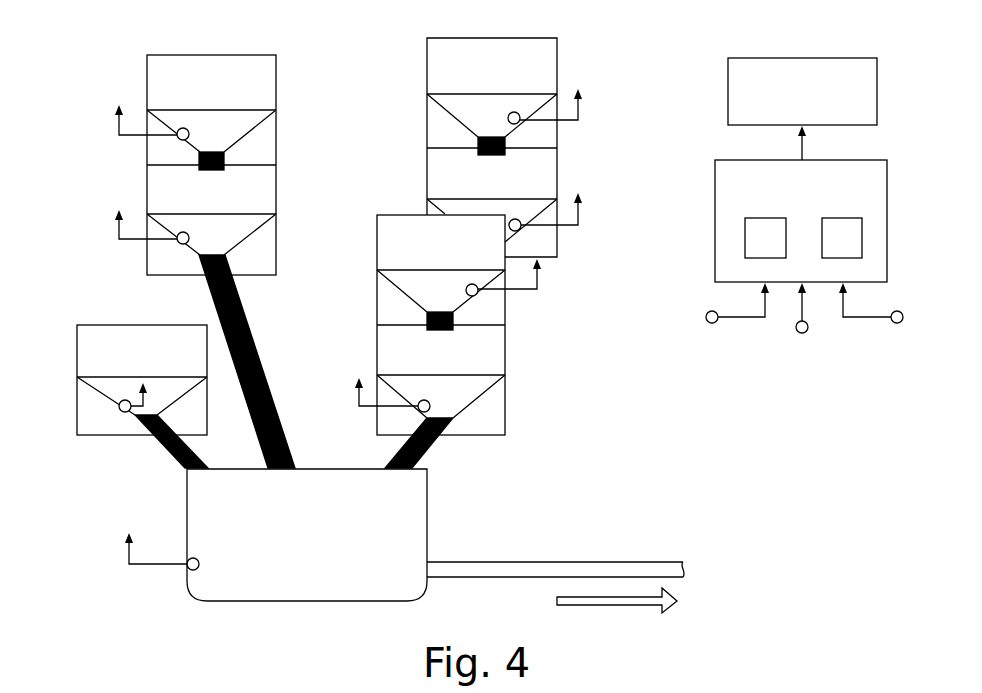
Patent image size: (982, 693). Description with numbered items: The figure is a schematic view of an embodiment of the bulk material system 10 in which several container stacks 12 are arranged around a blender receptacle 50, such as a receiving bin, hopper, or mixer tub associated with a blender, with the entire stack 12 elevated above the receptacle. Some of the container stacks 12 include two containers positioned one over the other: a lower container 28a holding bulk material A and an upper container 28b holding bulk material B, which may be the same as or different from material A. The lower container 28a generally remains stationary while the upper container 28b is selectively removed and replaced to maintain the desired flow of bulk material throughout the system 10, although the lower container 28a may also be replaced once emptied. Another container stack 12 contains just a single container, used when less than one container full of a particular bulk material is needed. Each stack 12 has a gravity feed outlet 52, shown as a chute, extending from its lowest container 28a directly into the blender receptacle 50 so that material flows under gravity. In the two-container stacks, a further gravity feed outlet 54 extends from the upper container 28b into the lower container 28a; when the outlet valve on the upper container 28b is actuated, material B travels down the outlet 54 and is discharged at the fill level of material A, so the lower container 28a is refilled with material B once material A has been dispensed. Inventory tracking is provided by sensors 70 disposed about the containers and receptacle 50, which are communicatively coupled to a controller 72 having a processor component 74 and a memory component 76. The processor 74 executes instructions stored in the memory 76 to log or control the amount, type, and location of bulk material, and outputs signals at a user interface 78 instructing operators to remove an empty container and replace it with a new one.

The system 10 is at (94, 69).
The container stack 12 is at (161, 49).
The lower container 28a is at (277, 195).
The upper container 28b is at (277, 90).
The blender receptacle 50 is at (186, 542).
The gravity feed outlet 52 is at (250, 337).
The gravity feed outlet 54 is at (225, 155).
The sensor 70 is at (180, 138).
The controller 72 is at (828, 160).
The processor component 74 is at (744, 238).
The memory component 76 is at (862, 236).
The user interface 78 is at (828, 58).